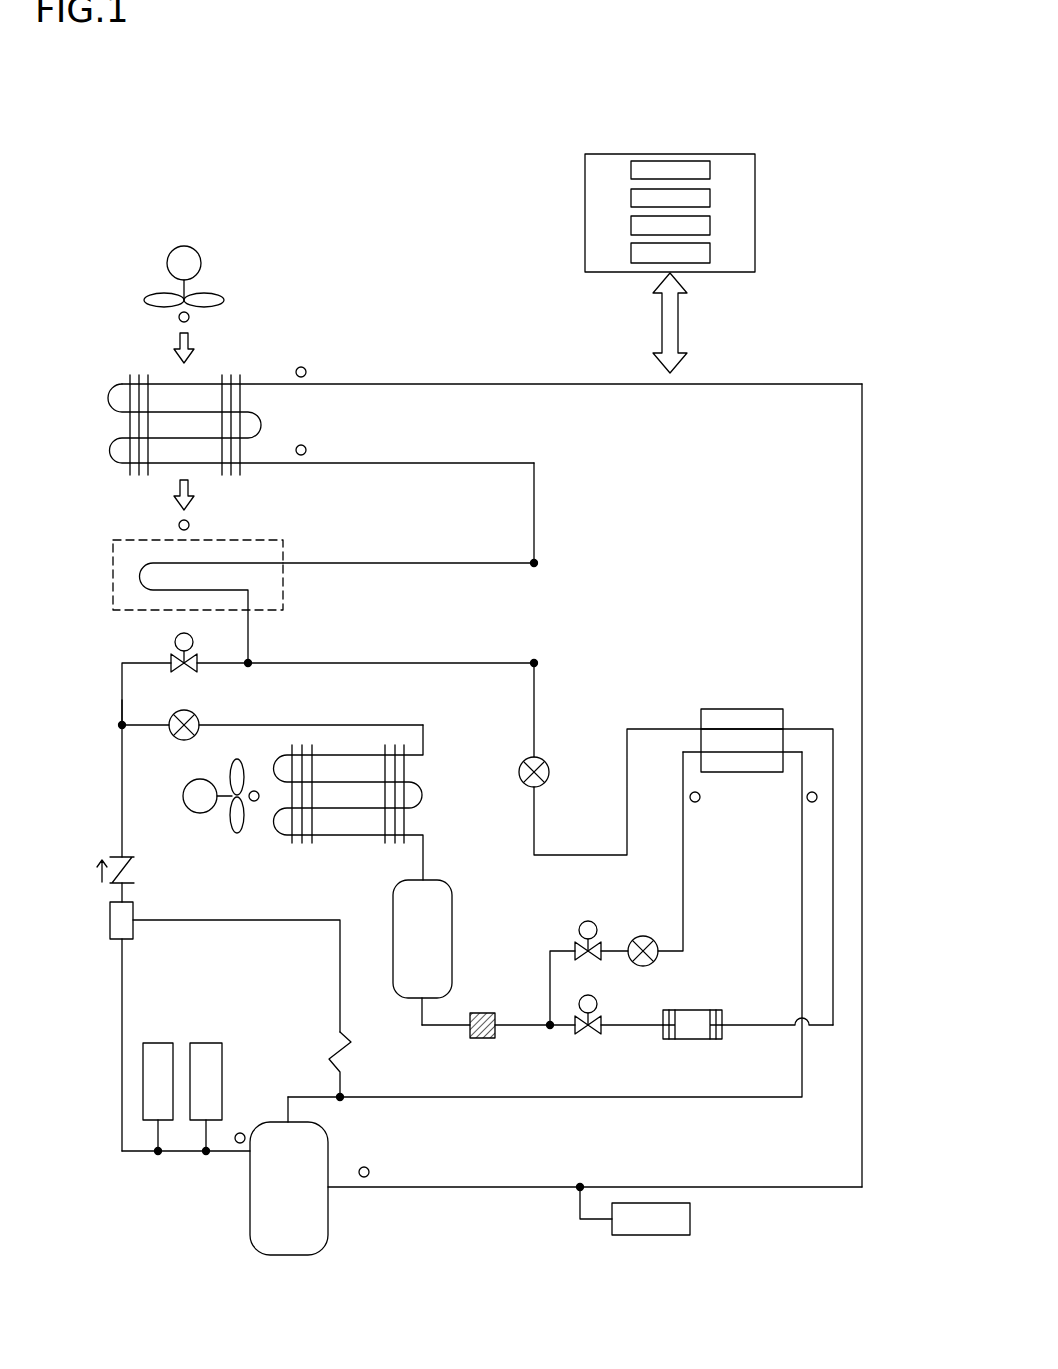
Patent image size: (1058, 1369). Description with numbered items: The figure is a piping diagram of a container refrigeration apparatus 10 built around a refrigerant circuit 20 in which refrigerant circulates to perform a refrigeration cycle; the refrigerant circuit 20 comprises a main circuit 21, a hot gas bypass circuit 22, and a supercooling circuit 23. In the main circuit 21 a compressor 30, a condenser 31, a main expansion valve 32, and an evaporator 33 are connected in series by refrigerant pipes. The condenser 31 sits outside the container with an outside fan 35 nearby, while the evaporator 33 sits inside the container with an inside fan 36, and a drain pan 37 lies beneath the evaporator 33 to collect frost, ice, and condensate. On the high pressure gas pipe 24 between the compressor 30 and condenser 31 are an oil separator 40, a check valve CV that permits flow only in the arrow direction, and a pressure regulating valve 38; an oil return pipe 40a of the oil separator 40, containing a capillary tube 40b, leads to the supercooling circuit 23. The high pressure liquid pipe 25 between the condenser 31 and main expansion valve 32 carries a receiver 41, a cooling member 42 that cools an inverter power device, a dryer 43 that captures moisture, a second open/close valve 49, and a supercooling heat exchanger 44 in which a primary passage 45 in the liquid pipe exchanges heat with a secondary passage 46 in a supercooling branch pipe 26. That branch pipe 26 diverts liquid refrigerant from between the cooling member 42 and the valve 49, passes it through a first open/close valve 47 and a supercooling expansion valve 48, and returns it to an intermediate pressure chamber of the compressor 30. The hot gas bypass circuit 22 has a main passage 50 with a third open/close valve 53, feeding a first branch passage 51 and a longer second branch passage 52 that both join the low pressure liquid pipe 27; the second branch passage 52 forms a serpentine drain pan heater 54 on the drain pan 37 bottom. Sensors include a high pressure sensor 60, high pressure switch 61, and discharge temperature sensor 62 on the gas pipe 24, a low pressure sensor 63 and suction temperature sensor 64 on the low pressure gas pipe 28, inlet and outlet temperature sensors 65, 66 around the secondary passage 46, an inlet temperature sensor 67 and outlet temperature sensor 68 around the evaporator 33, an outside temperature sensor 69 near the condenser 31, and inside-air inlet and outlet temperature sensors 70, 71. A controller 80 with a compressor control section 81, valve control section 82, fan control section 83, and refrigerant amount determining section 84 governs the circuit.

The container refrigeration apparatus 10 is at (88, 163).
The refrigerant circuit 20 is at (835, 340).
The main circuit 21 is at (897, 567).
The hot gas bypass circuit 22 is at (126, 651).
The supercooling circuit 23 is at (664, 901).
The high pressure gas pipe 24 is at (120, 772).
The high pressure liquid pipe 25 is at (514, 1031).
The supercooling branch pipe 26 is at (645, 1099).
The low pressure liquid pipe 27 is at (537, 517).
The low pressure gas pipe 28 is at (809, 1190).
The compressor 30 is at (250, 1220).
The condenser 31 is at (425, 795).
The main expansion valve 32 is at (534, 757).
The evaporator 33 is at (110, 398).
The outside fan 35 is at (230, 824).
The inside fan 36 is at (224, 300).
The drain pan 37 is at (111, 574).
The pressure regulating valve 38 is at (183, 741).
The oil separator 40 is at (110, 921).
The oil return pipe 40a is at (340, 958).
The capillary tube 40b is at (340, 1037).
The receiver 41 is at (454, 910).
The cooling member 42 is at (486, 1013).
The dryer 43 is at (693, 1040).
The supercooling heat exchanger 44 is at (768, 709).
The primary passage 45 is at (719, 709).
The secondary passage 46 is at (745, 772).
The first open/close valve 47 is at (592, 957).
The supercooling expansion valve 48 is at (649, 963).
The second open/close valve 49 is at (592, 1031).
The main passage 50 is at (120, 696).
The first branch passage 51 is at (426, 662).
The second branch passage 52 is at (426, 562).
The third open/close valve 53 is at (196, 668).
The drain pan heater 54 is at (150, 562).
The high pressure sensor 60 is at (158, 1043).
The high pressure switch 61 is at (206, 1043).
The discharge temperature sensor 62 is at (243, 1133).
The low pressure sensor 63 is at (692, 1219).
The suction temperature sensor 64 is at (368, 1169).
The inlet temperature sensor 65 is at (699, 802).
The outlet temperature sensor 66 is at (818, 797).
The inlet temperature sensor 67 is at (305, 446).
The outlet temperature sensor 68 is at (305, 368).
The outside temperature sensor 69 is at (255, 802).
The inlet temperature sensor 70 is at (178, 318).
The outlet temperature sensor 71 is at (189, 522).
The controller 80 is at (670, 154).
The compressor control section 81 is at (710, 170).
The valve control section 82 is at (710, 198).
The fan control section 83 is at (710, 226).
The refrigerant amount determining section 84 is at (710, 255).
The check valve CV is at (117, 857).